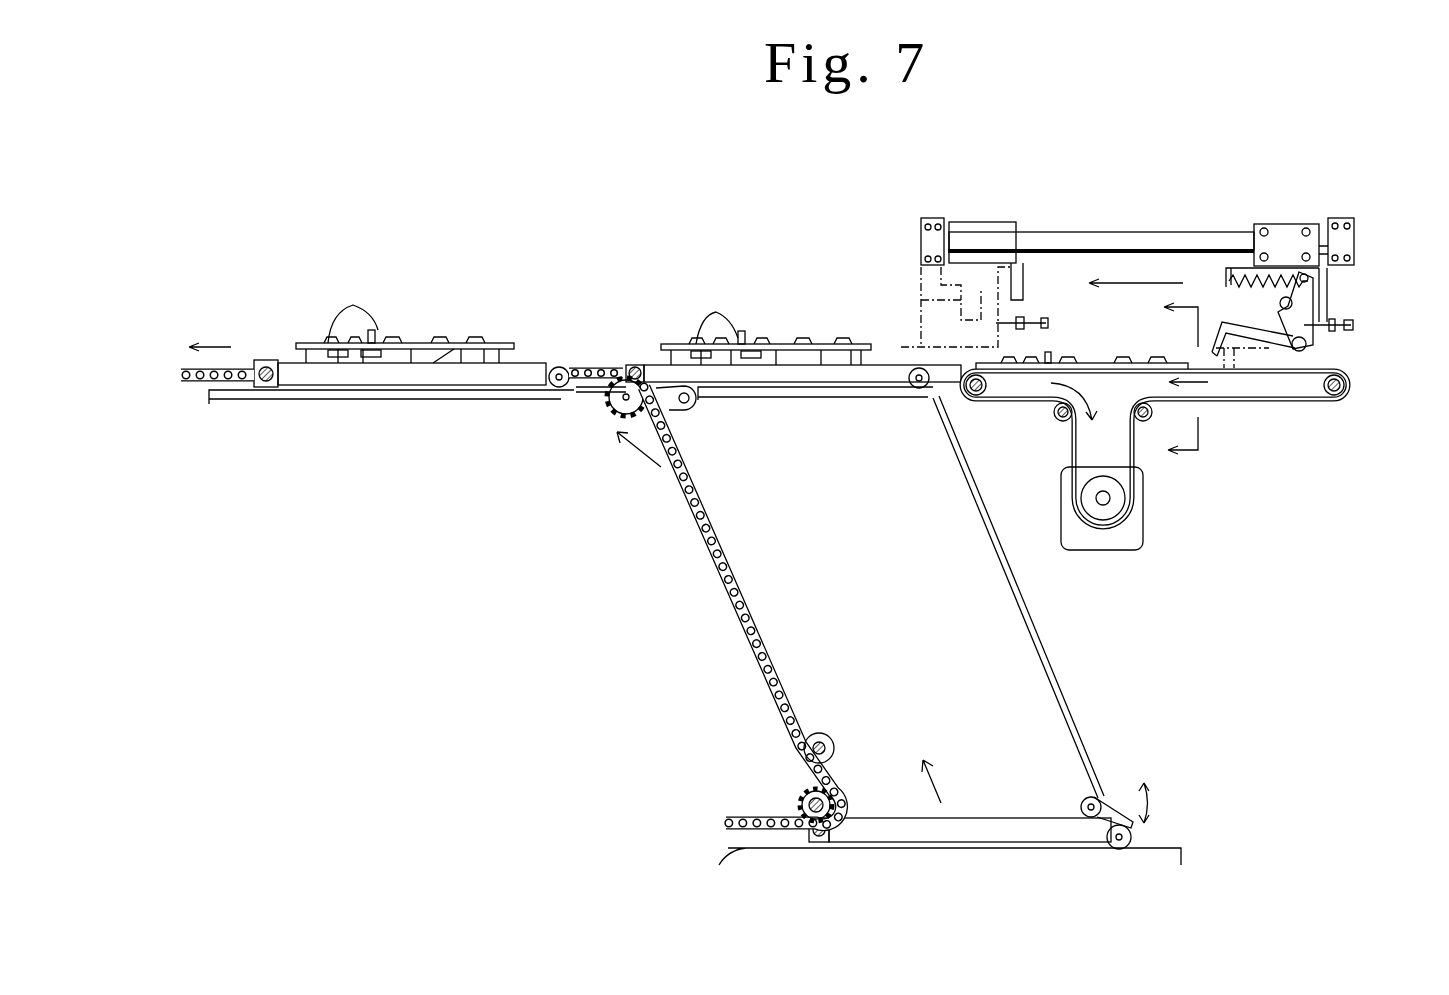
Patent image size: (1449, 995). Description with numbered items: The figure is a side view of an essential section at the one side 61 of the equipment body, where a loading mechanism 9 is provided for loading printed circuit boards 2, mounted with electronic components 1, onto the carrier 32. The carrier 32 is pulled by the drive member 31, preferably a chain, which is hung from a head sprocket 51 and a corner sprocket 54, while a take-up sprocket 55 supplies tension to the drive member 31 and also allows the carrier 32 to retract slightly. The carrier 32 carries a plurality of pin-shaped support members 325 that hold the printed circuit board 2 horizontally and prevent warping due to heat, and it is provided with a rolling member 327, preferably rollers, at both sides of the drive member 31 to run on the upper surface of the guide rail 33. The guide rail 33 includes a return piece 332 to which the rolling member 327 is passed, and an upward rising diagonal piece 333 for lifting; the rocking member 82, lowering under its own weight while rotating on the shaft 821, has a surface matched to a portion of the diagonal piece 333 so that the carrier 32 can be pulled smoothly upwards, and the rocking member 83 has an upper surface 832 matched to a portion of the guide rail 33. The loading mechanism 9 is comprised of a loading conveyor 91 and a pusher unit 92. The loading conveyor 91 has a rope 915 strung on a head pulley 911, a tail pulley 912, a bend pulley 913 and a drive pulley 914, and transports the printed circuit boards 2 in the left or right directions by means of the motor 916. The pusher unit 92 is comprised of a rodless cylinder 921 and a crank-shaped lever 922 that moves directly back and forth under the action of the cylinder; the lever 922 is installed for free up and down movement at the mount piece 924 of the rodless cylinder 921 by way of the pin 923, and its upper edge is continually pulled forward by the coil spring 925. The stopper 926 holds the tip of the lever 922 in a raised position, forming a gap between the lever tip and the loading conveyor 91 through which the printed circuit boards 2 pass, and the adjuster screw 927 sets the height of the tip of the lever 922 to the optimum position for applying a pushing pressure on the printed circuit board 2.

The electronic components 1 is at (351, 306).
The printed circuit board 2 is at (483, 360).
The loading mechanism 9 is at (1218, 213).
The drive member 31 is at (709, 578).
The carrier 32 is at (310, 395).
The guide rail 33 is at (230, 392).
The head sprocket 51 is at (605, 395).
The corner sprocket 54 is at (800, 795).
The take-up sprocket 55 is at (833, 740).
The side of the equipment body 61 is at (1079, 627).
The rocking member 82 is at (1082, 800).
The rocking member 83 is at (690, 410).
The loading conveyor 91 is at (1200, 460).
The pusher unit 92 is at (1362, 225).
The pin-shaped support members 325 is at (455, 352).
The rolling member 327 is at (550, 365).
The return piece 332 is at (740, 828).
The upward rising diagonal piece 333 is at (1068, 692).
The shaft 821 is at (1105, 798).
The upper surface 832 is at (658, 358).
The head pulley 911 is at (1345, 383).
The tail pulley 912 is at (985, 400).
The bend pulley 913 is at (1135, 420).
The drive pulley 914 is at (1122, 492).
The rope 915 is at (1222, 403).
The motor 916 is at (1143, 510).
The rodless cylinder 921 is at (1102, 232).
The lever 922 is at (900, 345).
The pin 923 is at (1305, 290).
The mount piece 924 is at (985, 222).
The coil spring 925 is at (1241, 285).
The stopper 926 is at (1352, 326).
The adjuster screw 927 is at (1315, 325).